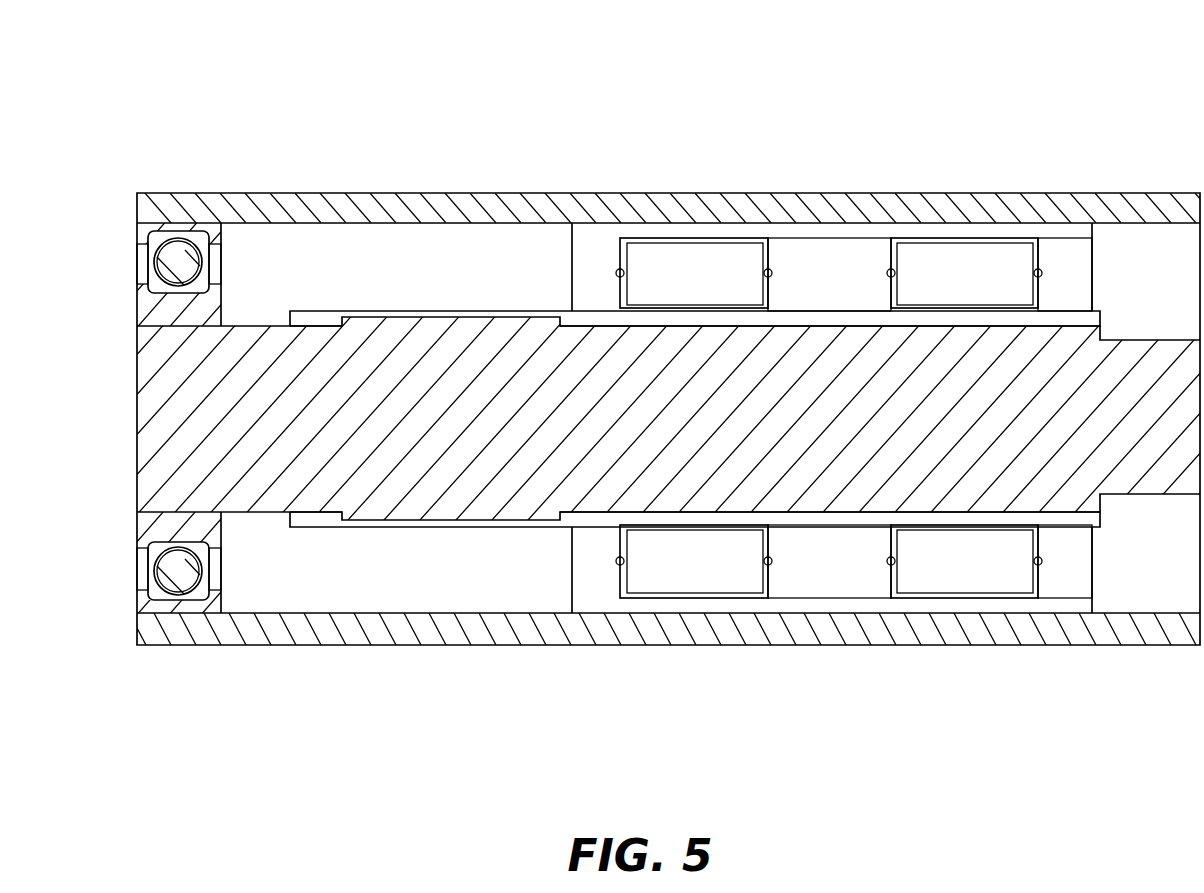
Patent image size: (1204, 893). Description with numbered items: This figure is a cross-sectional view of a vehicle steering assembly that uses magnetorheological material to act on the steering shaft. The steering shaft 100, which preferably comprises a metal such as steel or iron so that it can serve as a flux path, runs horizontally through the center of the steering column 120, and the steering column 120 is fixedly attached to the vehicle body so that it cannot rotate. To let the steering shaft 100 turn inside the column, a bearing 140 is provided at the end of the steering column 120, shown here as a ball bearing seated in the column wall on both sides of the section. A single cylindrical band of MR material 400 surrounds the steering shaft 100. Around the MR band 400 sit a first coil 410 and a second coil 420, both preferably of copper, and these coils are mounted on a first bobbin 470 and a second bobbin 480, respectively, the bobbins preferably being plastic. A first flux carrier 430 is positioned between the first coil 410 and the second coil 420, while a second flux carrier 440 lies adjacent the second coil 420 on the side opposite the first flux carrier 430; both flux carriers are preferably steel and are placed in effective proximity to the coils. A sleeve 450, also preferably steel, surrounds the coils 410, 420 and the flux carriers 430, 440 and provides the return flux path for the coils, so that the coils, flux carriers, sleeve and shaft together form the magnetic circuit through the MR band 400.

The steering shaft 100 is at (243, 492).
The steering column 120 is at (346, 205).
The bearing 140 is at (176, 240).
The band of MR material 400 is at (330, 313).
The first coil 410 is at (694, 268).
The second coil 420 is at (973, 258).
The first flux carrier 430 is at (868, 255).
The second flux carrier 440 is at (1060, 258).
The sleeve 450 is at (592, 242).
The first bobbin 470 is at (769, 258).
The second bobbin 480 is at (1040, 293).